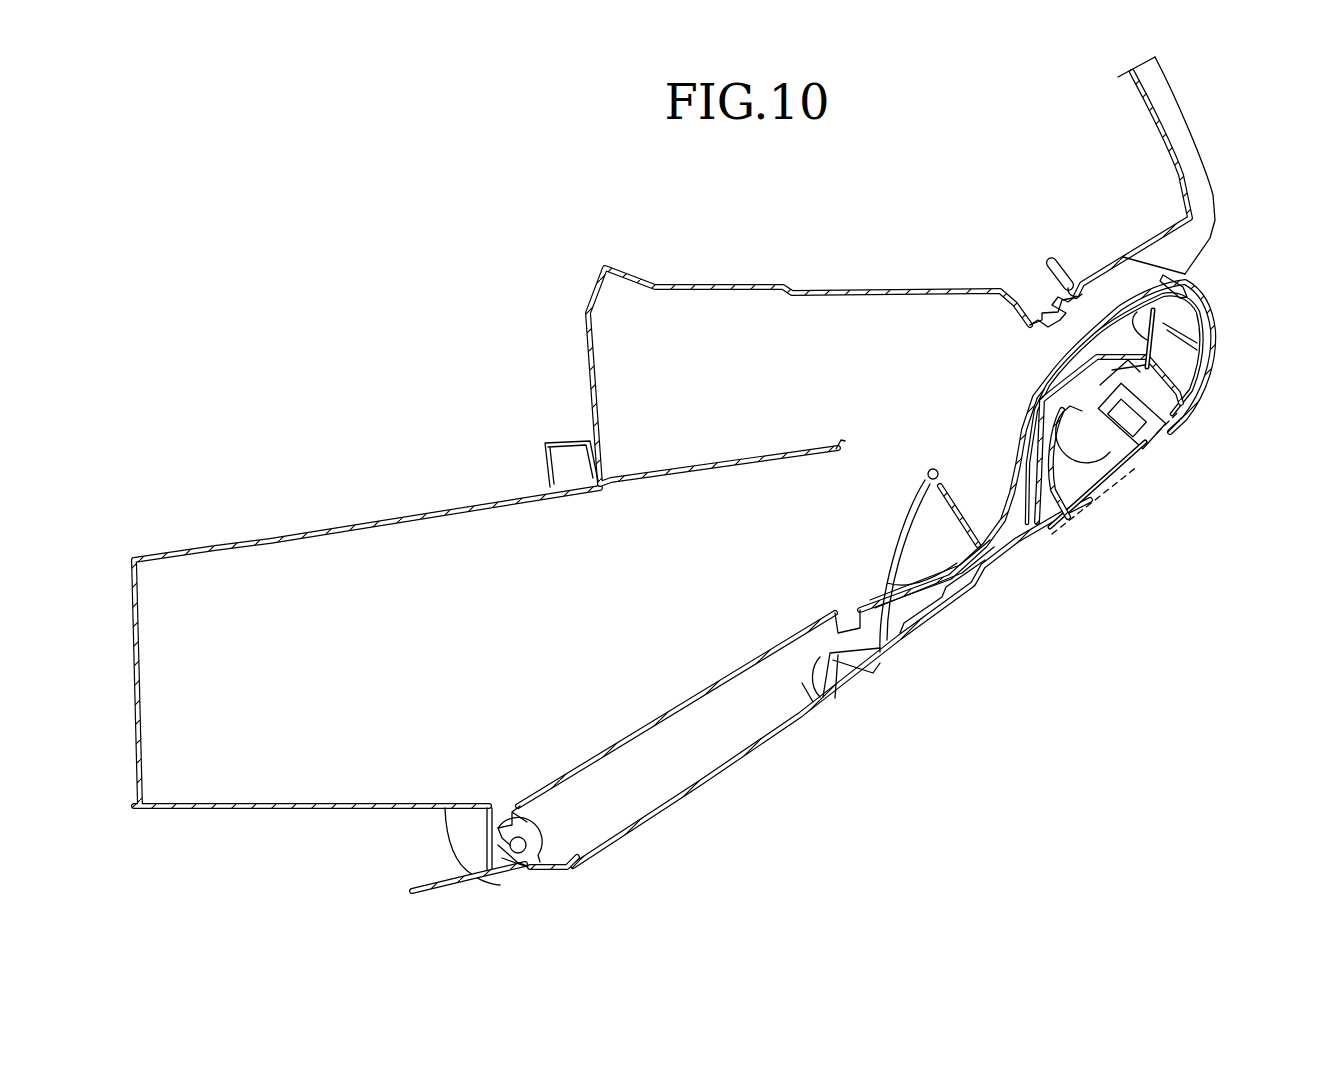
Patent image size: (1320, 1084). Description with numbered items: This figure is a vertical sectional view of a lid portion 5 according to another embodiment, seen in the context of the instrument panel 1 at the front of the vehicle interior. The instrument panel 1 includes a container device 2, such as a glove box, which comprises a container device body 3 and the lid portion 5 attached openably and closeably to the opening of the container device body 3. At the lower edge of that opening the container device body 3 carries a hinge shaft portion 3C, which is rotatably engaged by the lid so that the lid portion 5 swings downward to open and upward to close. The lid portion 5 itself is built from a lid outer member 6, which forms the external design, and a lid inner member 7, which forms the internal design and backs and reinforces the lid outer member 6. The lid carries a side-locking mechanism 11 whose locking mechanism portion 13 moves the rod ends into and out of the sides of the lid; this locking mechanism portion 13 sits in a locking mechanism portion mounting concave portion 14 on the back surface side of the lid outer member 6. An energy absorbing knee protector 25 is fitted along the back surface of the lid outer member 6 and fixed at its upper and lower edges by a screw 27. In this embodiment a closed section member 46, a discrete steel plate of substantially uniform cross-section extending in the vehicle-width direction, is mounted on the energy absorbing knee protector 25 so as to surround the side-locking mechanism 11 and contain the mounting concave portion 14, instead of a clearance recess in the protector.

The instrument panel 1 is at (1200, 128).
The container device 2 is at (546, 890).
The container device body 3 is at (497, 885).
The hinge shaft portion 3C is at (527, 836).
The lid portion 5 is at (565, 893).
The lid outer member 6 is at (762, 758).
The lid inner member 7 is at (663, 718).
The side-locking mechanism 11 is at (1156, 448).
The locking mechanism portion 13 is at (1165, 421).
The locking mechanism portion mounting concave portion 14 is at (1102, 470).
The energy absorbing knee protector 25 is at (977, 593).
The screw 27 is at (1190, 306).
The closed section member 46 is at (1057, 524).